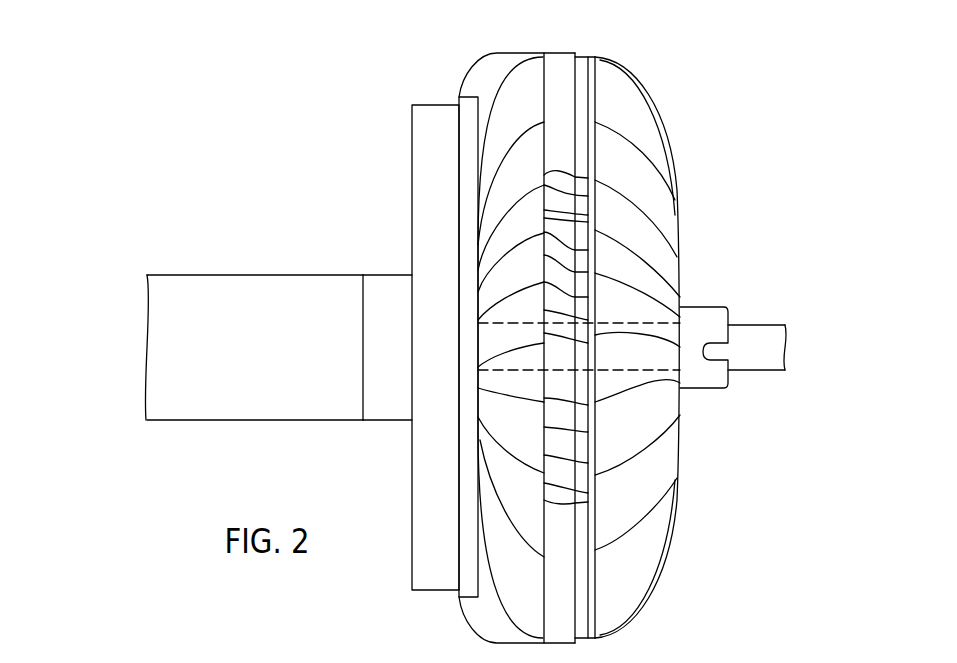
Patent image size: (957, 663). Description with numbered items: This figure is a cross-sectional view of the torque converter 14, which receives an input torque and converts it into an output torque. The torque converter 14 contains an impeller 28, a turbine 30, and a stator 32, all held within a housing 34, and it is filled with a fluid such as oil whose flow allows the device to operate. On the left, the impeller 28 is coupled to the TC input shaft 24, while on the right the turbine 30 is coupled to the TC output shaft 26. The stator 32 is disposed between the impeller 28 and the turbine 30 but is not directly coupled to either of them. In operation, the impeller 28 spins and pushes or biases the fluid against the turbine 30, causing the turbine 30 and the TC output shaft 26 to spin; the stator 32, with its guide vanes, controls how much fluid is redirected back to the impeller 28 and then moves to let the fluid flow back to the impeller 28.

The torque converter 14 is at (870, 69).
The TC input shaft 24 is at (255, 420).
The TC output shaft 26 is at (758, 325).
The impeller 28 is at (390, 285).
The turbine 30 is at (520, 475).
The stator 32 is at (582, 388).
The housing 34 is at (638, 73).